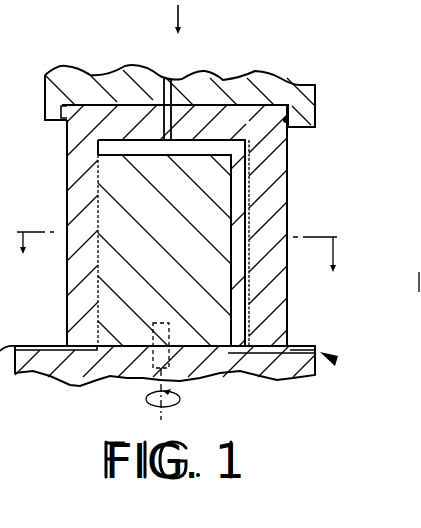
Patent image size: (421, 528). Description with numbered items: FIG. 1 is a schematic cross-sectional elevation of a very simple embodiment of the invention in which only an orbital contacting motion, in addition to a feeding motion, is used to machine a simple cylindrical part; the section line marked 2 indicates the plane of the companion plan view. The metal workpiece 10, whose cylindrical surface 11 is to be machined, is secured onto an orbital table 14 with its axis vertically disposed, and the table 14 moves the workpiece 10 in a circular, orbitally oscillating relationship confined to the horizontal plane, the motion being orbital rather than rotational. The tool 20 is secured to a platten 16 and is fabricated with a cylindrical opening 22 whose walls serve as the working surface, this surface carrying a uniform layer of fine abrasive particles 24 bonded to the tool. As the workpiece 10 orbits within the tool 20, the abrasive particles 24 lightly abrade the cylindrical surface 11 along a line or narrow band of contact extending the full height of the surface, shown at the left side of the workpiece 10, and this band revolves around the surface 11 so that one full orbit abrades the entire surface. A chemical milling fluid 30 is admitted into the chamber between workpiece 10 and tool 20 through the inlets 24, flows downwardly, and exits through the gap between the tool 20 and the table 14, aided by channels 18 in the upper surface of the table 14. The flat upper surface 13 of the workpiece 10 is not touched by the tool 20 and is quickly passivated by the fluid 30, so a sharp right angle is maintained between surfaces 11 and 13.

The workpiece 10 is at (125, 192).
The cylindrical surface 11 is at (230, 315).
The flat upper surface 13 is at (254, 146).
The orbital table 14 is at (259, 368).
The platten 16 is at (108, 85).
The channels 18 is at (43, 344).
The tool 20 is at (272, 178).
The cylindrical opening 22 is at (196, 140).
The abrasive particles 24 is at (153, 85).
The chemical milling fluid 30 is at (171, 68).
The section line 2- 2 is at (178, 259).